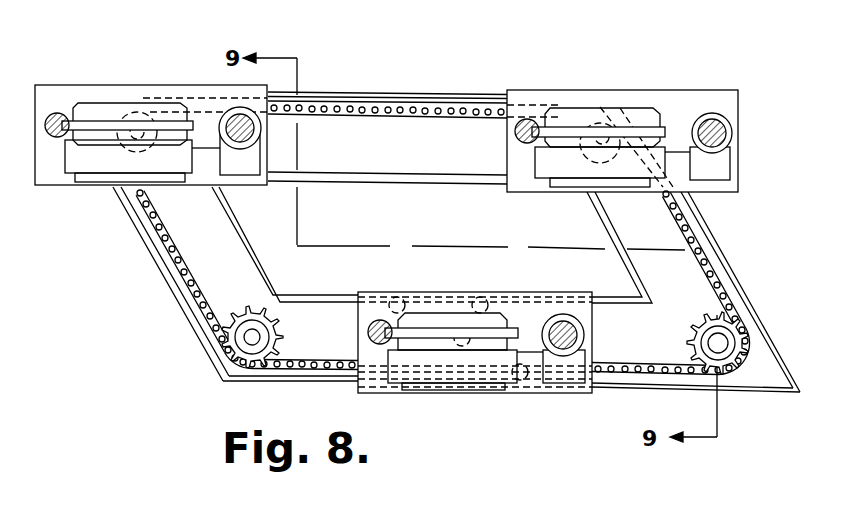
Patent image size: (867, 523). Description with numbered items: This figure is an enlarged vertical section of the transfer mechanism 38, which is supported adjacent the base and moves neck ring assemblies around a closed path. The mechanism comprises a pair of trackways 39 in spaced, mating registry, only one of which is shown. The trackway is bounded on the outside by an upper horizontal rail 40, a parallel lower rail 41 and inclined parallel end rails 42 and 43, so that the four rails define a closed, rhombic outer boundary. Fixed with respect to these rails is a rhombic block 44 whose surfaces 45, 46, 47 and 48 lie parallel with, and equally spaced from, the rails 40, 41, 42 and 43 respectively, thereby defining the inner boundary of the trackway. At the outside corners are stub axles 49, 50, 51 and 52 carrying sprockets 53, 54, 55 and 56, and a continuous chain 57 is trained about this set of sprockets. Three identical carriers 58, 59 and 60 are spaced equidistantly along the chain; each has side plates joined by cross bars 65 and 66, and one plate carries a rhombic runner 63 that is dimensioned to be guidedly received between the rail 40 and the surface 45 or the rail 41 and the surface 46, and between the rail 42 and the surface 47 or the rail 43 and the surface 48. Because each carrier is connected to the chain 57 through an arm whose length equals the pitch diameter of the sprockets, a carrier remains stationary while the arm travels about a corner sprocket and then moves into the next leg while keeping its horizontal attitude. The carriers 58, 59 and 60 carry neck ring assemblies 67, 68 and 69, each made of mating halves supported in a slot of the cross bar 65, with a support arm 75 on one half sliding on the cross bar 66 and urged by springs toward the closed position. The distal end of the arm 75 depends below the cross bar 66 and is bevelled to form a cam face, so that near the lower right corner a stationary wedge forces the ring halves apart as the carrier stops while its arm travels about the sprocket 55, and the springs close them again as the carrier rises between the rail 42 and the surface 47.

The transfer mechanism 38 is at (372, 66).
The trackway 39 is at (403, 148).
The upper horizontal rail 40 is at (425, 92).
The lower rail 41 is at (292, 382).
The inclined end rail 42 is at (722, 250).
The inclined end rail 43 is at (157, 265).
The rhombic block 44 is at (415, 232).
The surface 45 is at (425, 175).
The surface 46 is at (300, 298).
The surface 47 is at (606, 215).
The surface 48 is at (240, 234).
The stub axle 49 is at (110, 160).
The stub axle 50 is at (250, 332).
The stub axle 51 is at (712, 343).
The stub axle 52 is at (580, 152).
The sprocket 53 is at (150, 172).
The sprocket 54 is at (278, 346).
The sprocket 55 is at (700, 320).
The sprocket 56 is at (585, 183).
The continuous chain 57 is at (338, 112).
The carrier 58 is at (135, 85).
The carrier 59 is at (430, 292).
The carrier 60 is at (668, 90).
The rhombic runner 63 is at (400, 390).
The cross bar 65 is at (55, 113).
The cross bar 66 is at (255, 128).
The neck ring assembly 67 is at (90, 100).
The neck ring assembly 68 is at (466, 312).
The neck ring assembly 69 is at (601, 106).
The support arm 75 is at (243, 165).